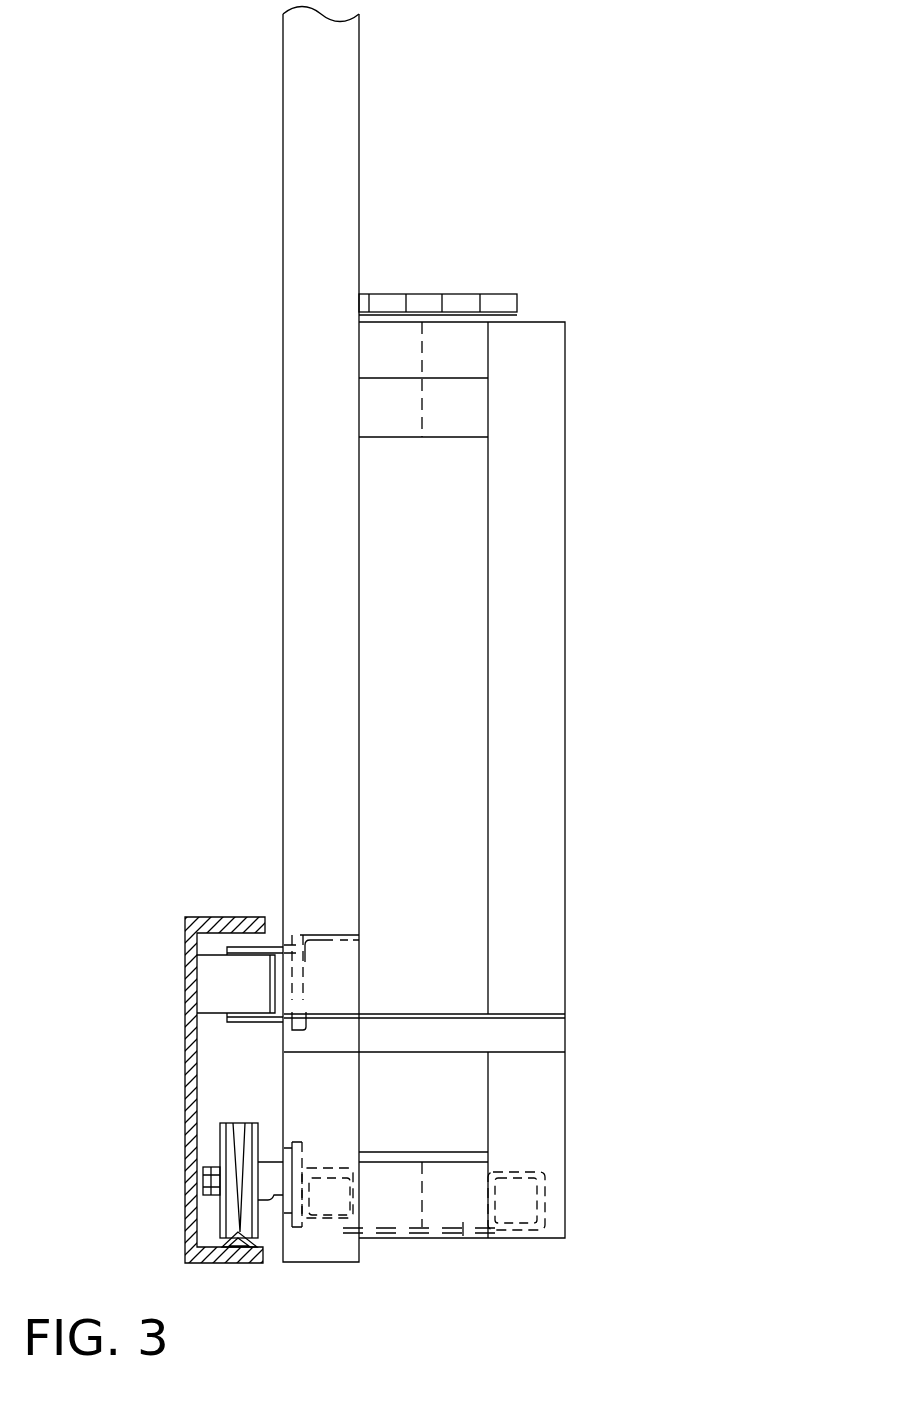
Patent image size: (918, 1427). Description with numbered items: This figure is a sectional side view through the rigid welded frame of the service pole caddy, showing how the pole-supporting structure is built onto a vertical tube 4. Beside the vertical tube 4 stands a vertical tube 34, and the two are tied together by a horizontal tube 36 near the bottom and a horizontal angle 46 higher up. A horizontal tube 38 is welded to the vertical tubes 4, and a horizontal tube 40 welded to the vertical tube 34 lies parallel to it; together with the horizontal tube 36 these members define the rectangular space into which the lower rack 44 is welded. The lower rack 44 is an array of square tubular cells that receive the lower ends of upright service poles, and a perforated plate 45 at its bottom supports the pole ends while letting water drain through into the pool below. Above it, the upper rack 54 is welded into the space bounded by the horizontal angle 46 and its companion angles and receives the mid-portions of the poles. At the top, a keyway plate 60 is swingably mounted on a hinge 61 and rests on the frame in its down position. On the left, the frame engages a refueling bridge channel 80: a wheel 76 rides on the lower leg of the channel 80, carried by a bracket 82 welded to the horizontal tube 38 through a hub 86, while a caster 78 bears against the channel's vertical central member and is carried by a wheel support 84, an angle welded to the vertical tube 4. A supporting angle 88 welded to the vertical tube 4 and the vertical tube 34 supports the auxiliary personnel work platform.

The vertical tube 4 is at (300, 622).
The vertical tube 34 is at (547, 550).
The horizontal tube 36 is at (402, 1220).
The horizontal tube 38 is at (338, 1158).
The horizontal tube 40 is at (548, 1200).
The lower rack 44 is at (380, 1243).
The perforated plate 45 is at (464, 1240).
The horizontal angle 46 is at (377, 363).
The upper rack 54 is at (428, 451).
The keyway plate 60 is at (522, 313).
The hinge 61 is at (418, 295).
The wheel 76 is at (224, 1123).
The caster 78 is at (210, 975).
The refueling bridge channel 80 is at (192, 1178).
The bracket 82 is at (300, 1143).
The wheel support 84 is at (336, 938).
The hub 86 is at (268, 1160).
The supporting angle 88 is at (554, 1041).